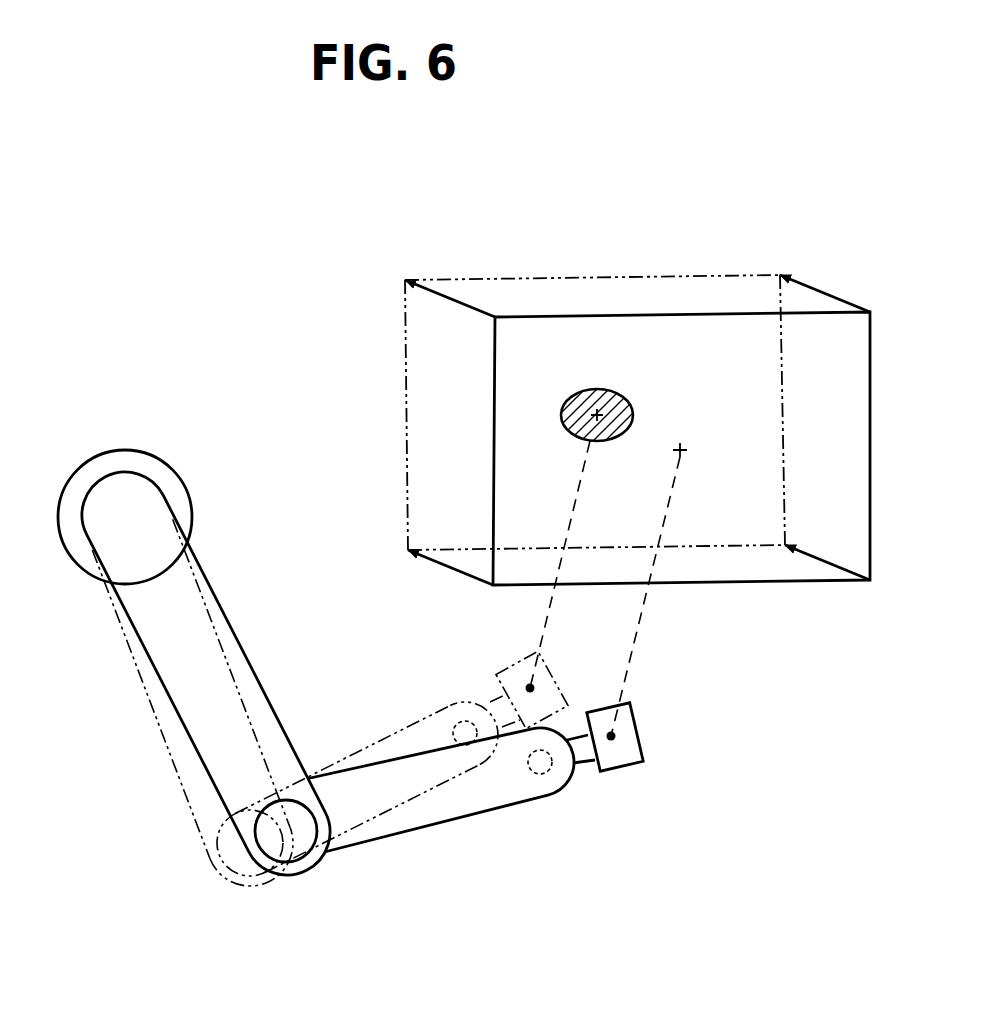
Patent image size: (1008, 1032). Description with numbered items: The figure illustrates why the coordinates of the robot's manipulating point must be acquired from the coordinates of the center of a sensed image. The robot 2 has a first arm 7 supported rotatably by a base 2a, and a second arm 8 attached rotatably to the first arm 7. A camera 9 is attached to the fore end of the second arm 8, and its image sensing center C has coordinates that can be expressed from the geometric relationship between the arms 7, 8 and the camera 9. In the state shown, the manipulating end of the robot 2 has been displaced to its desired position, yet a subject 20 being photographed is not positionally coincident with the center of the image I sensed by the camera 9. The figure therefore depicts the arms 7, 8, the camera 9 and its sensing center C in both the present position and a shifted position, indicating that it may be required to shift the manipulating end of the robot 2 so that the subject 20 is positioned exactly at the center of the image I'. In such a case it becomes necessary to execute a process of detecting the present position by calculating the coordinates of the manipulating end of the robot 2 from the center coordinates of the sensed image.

The robot 2 is at (337, 896).
The base 2a is at (155, 458).
The first arm 7 is at (271, 706).
The second arm 8 is at (502, 813).
The camera 9 is at (642, 738).
The subject 20 is at (627, 400).
The image sensing center C is at (530, 688).
The image I is at (637, 403).
The image I' is at (595, 378).